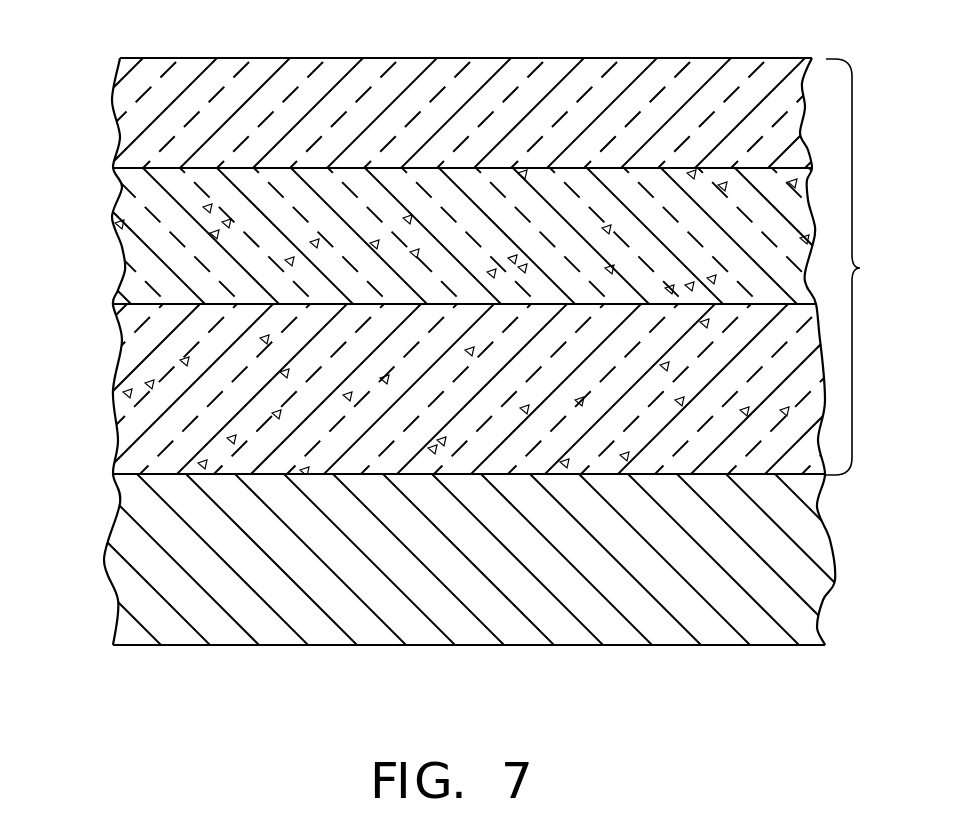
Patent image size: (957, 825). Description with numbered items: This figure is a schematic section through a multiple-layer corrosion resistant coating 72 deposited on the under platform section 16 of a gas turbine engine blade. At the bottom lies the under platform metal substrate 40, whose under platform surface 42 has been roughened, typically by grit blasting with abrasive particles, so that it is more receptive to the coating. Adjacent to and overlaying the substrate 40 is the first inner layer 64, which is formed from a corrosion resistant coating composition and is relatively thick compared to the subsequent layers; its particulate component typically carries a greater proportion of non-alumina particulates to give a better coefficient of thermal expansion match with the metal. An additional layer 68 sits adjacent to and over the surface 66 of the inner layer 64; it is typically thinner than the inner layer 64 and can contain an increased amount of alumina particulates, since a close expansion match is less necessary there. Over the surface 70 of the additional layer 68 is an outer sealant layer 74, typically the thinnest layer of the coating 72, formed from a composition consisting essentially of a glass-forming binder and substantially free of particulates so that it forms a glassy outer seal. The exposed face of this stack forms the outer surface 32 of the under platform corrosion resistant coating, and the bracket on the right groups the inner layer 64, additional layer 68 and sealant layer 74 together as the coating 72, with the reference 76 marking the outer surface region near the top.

The under platform section 16 is at (238, 665).
The surface of the under platform corrosion resistant coating 32 is at (283, 48).
The under platform metal substrate 40 is at (123, 537).
The under platform surface 42 is at (781, 488).
The first inner layer 64 is at (130, 413).
The surface of inner layer 66 is at (166, 316).
The additional layer 68 is at (138, 272).
The surface of additional layer 70 is at (168, 183).
The coating 72 is at (864, 267).
The outer sealant layer 74 is at (138, 107).
The outer surface 76 is at (572, 48).